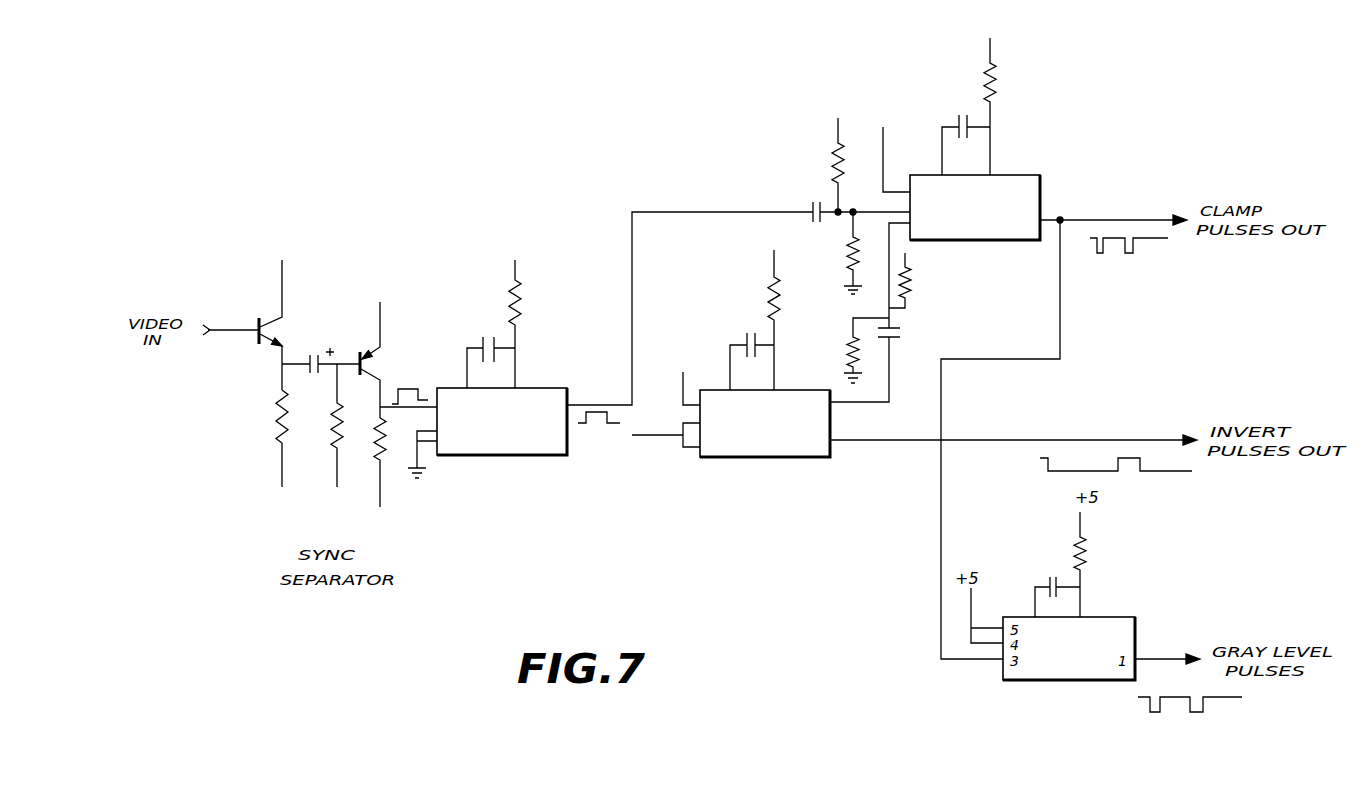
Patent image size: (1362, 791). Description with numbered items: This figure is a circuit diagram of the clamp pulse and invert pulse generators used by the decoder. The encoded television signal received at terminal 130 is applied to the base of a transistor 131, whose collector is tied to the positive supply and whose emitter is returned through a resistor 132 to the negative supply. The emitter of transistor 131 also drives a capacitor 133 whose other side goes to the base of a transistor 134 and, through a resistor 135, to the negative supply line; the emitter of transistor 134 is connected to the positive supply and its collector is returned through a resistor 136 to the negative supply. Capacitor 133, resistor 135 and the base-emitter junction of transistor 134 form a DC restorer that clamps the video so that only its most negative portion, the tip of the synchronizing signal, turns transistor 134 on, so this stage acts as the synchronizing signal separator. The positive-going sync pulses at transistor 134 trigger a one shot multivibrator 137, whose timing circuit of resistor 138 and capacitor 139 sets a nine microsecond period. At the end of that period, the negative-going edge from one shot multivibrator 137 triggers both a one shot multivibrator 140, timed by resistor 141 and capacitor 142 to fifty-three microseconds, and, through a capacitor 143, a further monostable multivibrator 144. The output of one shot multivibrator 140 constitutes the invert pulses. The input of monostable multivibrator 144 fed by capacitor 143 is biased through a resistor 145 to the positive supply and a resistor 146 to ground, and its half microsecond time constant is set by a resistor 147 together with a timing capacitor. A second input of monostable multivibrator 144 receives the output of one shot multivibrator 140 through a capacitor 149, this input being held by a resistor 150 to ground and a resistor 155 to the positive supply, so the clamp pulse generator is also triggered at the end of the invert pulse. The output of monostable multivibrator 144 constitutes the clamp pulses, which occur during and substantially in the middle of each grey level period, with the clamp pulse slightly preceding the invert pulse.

The terminal 130 is at (220, 331).
The transistor 131 is at (258, 317).
The resistor 132 is at (278, 431).
The capacitor 133 is at (315, 352).
The transistor 134 is at (357, 372).
The resistor 135 is at (340, 441).
The resistor 136 is at (384, 462).
The one shot multivibrator 137 is at (532, 457).
The resistor 138 is at (522, 300).
The capacitor 139 is at (487, 336).
The one shot multivibrator 140 is at (790, 458).
The resistor 141 is at (772, 284).
The capacitor 142 is at (746, 334).
The capacitor 143 is at (818, 225).
The monostable multivibrator 144 is at (1066, 148).
The resistor 145 is at (835, 157).
The resistor 146 is at (849, 262).
The resistor 147 is at (997, 75).
The capacitor 149 is at (898, 331).
The resistor 150 is at (849, 344).
The resistor 155 is at (908, 291).